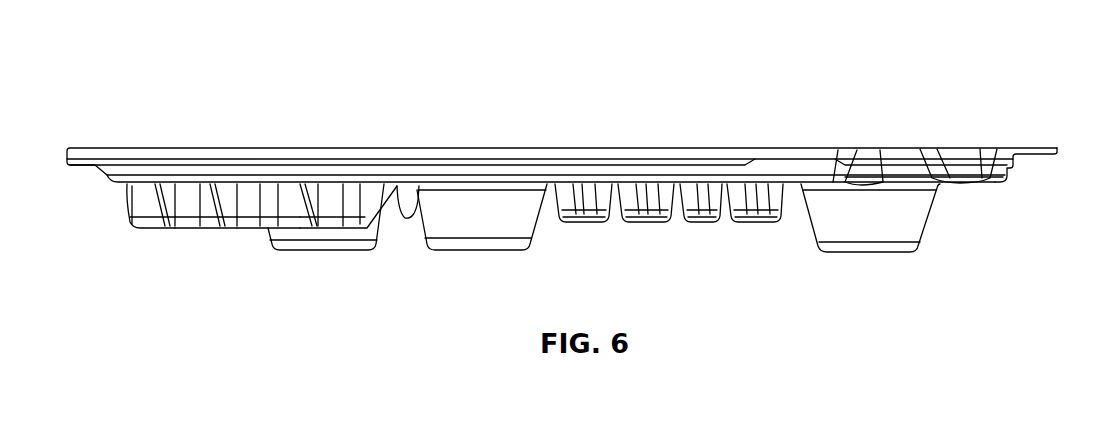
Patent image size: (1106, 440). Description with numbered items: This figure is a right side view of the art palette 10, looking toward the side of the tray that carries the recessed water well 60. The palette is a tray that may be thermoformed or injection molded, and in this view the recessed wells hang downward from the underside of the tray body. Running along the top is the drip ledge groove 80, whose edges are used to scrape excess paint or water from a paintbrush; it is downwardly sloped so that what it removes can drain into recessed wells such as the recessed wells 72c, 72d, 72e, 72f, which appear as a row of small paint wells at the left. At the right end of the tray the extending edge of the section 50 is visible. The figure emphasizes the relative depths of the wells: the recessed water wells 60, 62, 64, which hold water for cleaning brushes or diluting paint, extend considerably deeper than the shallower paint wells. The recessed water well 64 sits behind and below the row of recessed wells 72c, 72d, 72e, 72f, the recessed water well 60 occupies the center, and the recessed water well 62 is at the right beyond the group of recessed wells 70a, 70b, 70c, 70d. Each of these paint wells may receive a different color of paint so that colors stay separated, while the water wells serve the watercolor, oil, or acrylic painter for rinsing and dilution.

The art palette 10 is at (905, 58).
The section 50 is at (1055, 150).
The drip ledge groove 80 is at (607, 156).
The recessed water well 60 is at (470, 230).
The recessed water well 62 is at (875, 227).
The recessed water well 64 is at (336, 237).
The recessed well 70a is at (588, 218).
The recessed well 70b is at (640, 220).
The recessed well 70c is at (700, 218).
The recessed well 70d is at (763, 218).
The recessed well 72c is at (141, 207).
The recessed well 72d is at (192, 205).
The recessed well 72e is at (260, 205).
The recessed well 72f is at (312, 208).